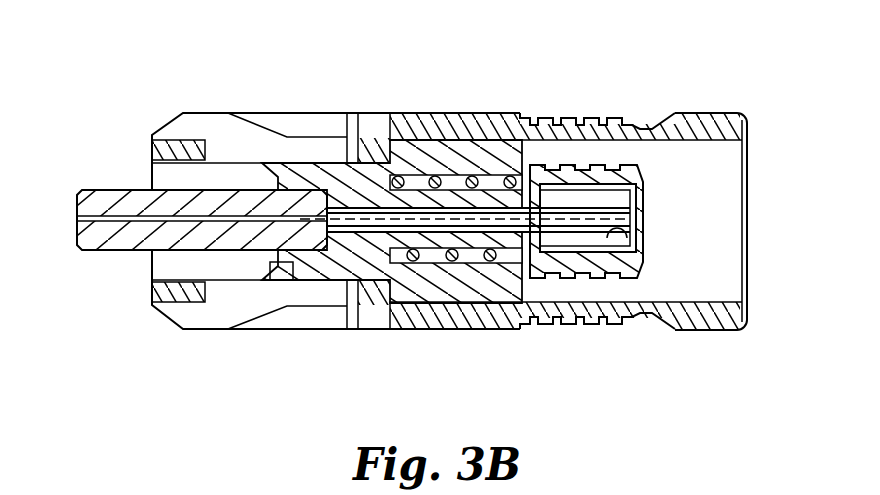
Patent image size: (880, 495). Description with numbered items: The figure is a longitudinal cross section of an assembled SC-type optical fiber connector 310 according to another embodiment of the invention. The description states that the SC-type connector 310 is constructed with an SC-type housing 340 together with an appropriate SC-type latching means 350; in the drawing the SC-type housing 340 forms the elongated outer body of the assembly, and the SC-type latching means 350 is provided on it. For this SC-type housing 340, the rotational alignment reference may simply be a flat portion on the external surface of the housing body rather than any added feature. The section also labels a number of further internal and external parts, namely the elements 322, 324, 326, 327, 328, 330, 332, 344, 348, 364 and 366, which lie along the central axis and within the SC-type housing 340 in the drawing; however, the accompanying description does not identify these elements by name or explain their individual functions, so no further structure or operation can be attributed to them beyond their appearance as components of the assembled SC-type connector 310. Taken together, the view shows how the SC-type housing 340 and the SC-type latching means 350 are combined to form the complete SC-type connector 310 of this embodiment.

The SC-type connector 310 is at (410, 195).
The tube 322 is at (107, 192).
The inner tube 324 is at (648, 215).
The lumen 326 is at (122, 214).
The tube tip 327 is at (630, 233).
The retaining member 328 is at (297, 272).
The spring 330 is at (447, 197).
The threads 332 is at (578, 263).
The SC-type housing 340 is at (652, 163).
The body 344 is at (432, 292).
The housing threads 348 is at (520, 122).
The SC-type latching means 350 is at (496, 318).
The sleeve 364 is at (357, 162).
The collar 366 is at (402, 167).